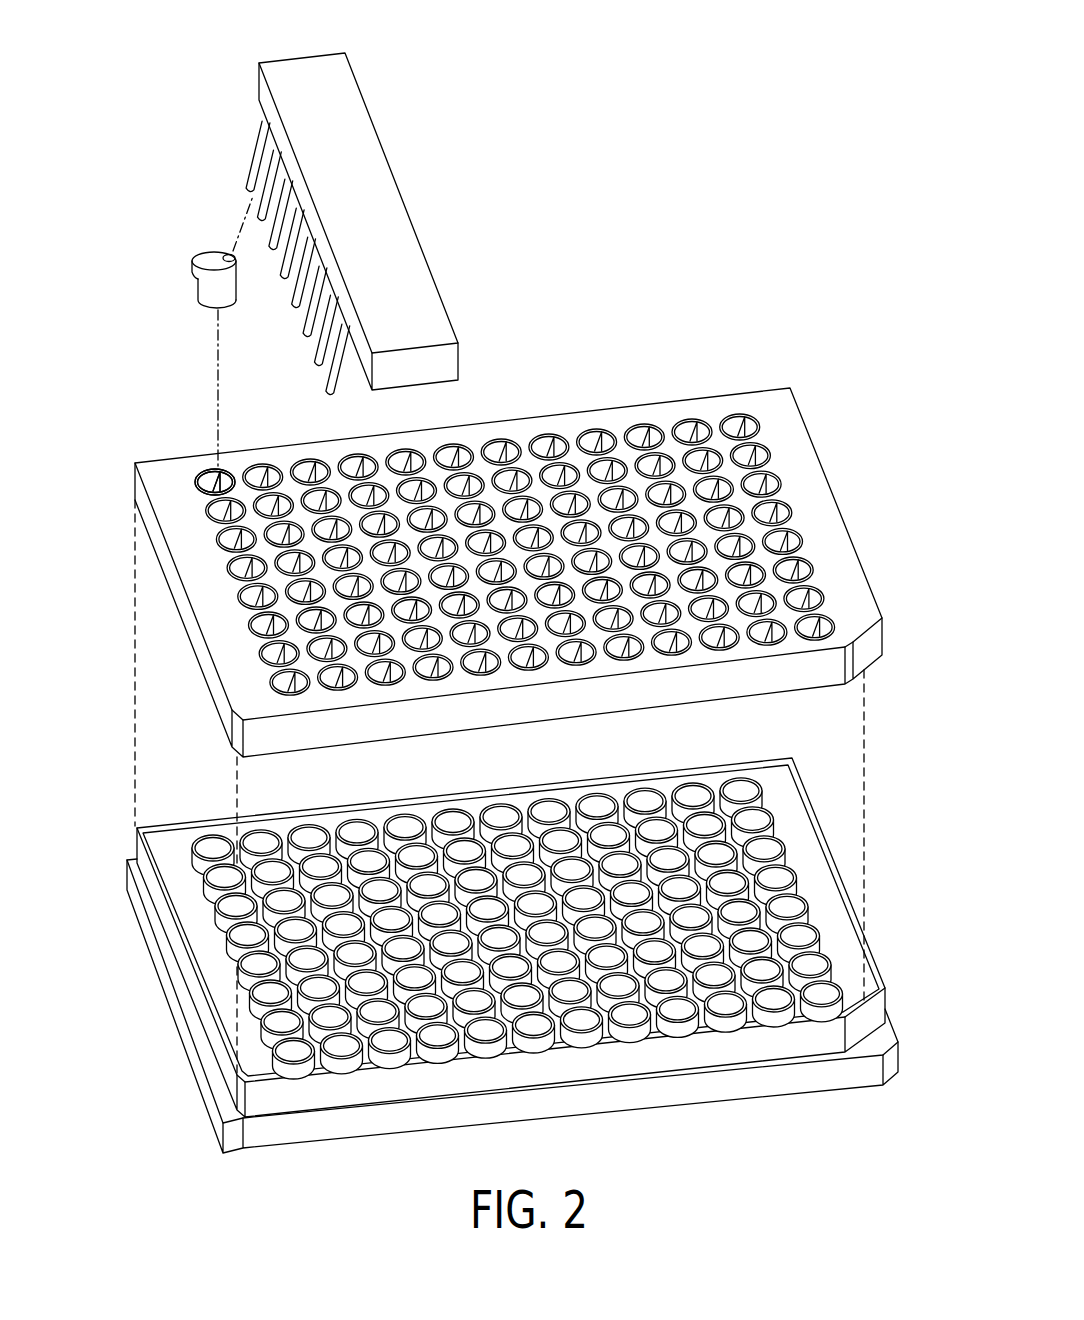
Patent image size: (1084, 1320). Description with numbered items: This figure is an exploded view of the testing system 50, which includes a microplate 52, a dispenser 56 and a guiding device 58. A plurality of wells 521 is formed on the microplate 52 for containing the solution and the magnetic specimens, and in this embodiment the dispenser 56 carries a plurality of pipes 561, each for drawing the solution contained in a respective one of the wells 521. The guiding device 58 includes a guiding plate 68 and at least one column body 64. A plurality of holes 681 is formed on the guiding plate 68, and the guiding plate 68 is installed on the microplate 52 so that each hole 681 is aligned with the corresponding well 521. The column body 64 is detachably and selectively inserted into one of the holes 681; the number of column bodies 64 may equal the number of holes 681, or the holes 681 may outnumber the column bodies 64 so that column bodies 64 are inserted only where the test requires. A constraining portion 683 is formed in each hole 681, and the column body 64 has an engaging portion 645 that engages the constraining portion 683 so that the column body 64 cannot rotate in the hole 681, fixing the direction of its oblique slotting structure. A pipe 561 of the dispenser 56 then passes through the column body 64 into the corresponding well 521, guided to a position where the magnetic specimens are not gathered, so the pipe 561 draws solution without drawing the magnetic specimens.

The testing system 50 is at (767, 85).
The microplate 52 is at (768, 759).
The wells 521 is at (307, 836).
The dispenser 56 is at (363, 80).
The pipe 561 is at (260, 157).
The guiding device 58 is at (117, 193).
The column body 64 is at (194, 248).
The engaging portion 645 is at (197, 283).
The guiding plate 68 is at (192, 394).
The holes 681 is at (212, 477).
The constraining portion 683 is at (198, 477).